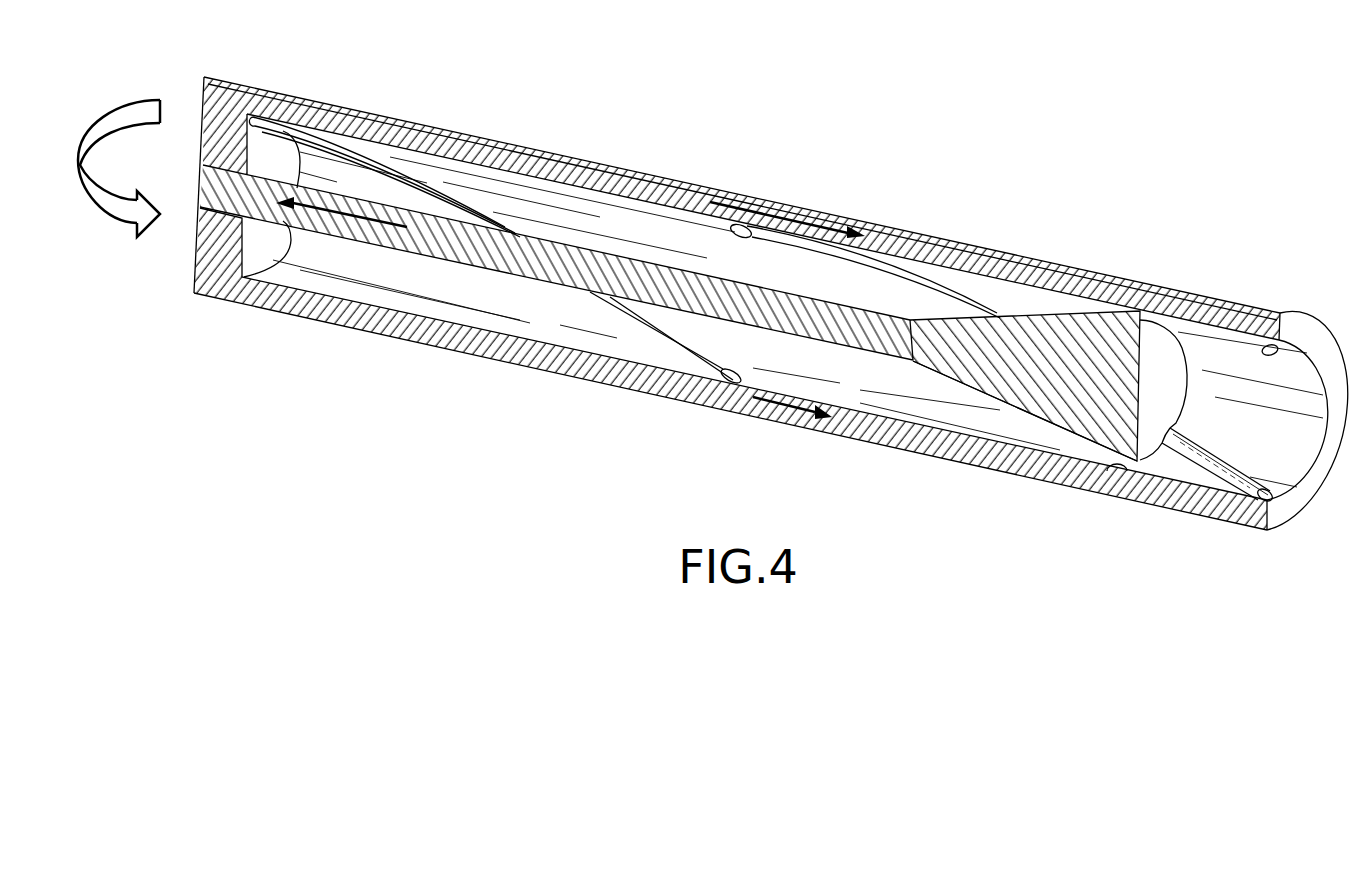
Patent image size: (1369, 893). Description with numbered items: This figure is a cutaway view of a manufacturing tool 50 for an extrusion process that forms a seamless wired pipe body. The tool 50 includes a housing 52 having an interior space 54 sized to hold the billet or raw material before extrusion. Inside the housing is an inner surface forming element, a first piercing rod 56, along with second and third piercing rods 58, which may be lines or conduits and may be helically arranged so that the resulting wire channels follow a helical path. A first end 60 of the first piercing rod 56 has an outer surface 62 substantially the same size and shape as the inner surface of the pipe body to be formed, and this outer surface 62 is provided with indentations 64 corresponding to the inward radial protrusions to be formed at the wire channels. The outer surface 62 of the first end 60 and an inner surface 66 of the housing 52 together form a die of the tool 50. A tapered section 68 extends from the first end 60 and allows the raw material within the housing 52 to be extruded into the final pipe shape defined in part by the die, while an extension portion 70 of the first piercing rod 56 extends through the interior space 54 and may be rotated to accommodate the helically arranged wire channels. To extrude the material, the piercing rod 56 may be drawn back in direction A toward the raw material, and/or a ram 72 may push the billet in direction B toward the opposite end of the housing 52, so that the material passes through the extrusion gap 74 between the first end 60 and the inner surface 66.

The manufacturing tool 50 is at (1006, 145).
The housing 52 is at (577, 363).
The interior space 54 is at (448, 290).
The first piercing rod 56 is at (987, 367).
The second and third piercing rods 58 is at (457, 197).
The first end 60 is at (1165, 343).
The outer surface 62 is at (1187, 357).
The indentations 64 is at (1188, 462).
The inner surface 66 is at (1100, 470).
The tapered section 68 is at (1010, 410).
The extension portion 70 is at (520, 262).
The ram 72 is at (260, 150).
The extrusion gap 74 is at (1155, 463).
The direction A is at (330, 210).
The direction B is at (775, 214).